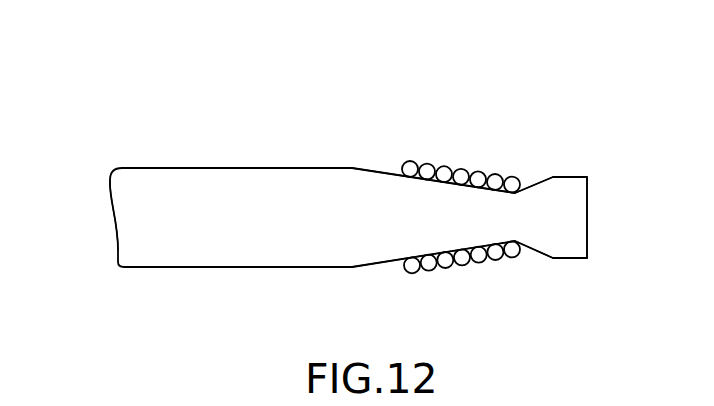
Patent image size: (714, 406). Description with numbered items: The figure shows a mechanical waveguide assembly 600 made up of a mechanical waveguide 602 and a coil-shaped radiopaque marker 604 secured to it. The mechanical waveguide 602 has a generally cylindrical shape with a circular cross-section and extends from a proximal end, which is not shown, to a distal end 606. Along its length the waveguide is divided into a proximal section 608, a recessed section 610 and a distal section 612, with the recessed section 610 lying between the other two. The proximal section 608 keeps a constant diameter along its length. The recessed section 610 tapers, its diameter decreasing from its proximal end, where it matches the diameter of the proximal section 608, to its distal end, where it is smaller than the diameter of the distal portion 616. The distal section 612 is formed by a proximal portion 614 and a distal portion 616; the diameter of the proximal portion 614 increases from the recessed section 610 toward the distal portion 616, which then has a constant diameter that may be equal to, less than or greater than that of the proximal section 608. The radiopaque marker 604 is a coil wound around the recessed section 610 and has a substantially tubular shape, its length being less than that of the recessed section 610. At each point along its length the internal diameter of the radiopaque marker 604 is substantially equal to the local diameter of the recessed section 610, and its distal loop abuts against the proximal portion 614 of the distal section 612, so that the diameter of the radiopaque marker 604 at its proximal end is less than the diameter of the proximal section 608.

The mechanical waveguide assembly 600 is at (147, 63).
The mechanical waveguide 602 is at (150, 178).
The radiopaque marker 604 is at (413, 167).
The distal end 606 is at (592, 242).
The proximal section 608 is at (194, 188).
The recessed section 610 is at (397, 217).
The distal section 612 is at (557, 209).
The proximal portion 614 is at (533, 180).
The distal portion 616 is at (567, 175).